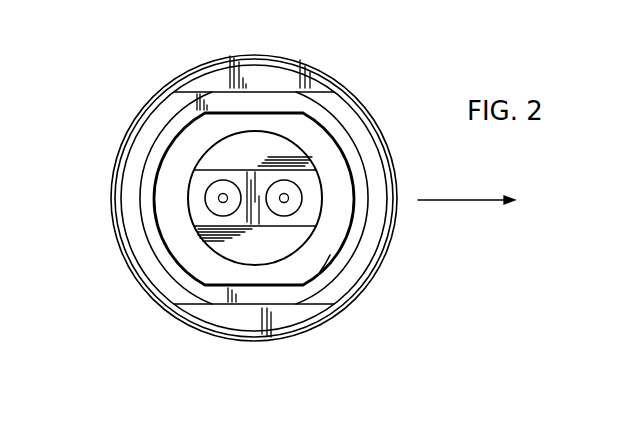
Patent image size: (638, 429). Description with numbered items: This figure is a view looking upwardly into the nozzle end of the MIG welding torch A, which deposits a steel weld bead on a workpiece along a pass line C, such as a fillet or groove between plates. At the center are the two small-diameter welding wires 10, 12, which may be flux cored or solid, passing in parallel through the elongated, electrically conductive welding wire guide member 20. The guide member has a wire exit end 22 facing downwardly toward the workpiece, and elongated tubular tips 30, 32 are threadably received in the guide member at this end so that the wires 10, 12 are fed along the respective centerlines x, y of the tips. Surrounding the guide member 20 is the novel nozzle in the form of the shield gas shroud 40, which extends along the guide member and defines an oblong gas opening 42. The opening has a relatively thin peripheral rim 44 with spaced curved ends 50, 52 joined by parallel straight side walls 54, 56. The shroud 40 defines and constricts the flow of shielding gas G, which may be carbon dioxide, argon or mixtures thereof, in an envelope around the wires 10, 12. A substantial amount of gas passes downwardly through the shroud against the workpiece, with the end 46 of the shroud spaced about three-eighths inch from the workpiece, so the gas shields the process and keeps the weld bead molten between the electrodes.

The welding wire 10 is at (222, 198).
The welding wire 12 is at (290, 200).
The welding wire guide member 20 is at (153, 232).
The wire exit end 22 is at (233, 170).
The tubular tip 30 is at (207, 290).
The tubular tip 32 is at (340, 262).
The shield gas shroud 40 is at (330, 330).
The oblong gas opening 42 is at (157, 262).
The peripheral rim 44 is at (233, 92).
The end of the shroud 46 is at (207, 250).
The curved end 50 is at (123, 190).
The curved end 52 is at (366, 244).
The straight side wall 54 is at (270, 98).
The straight side wall 56 is at (252, 306).
The welding torch A is at (405, 160).
The pass line C is at (462, 199).
The gas G is at (323, 133).
The centerline x is at (222, 197).
The centerline y is at (284, 198).